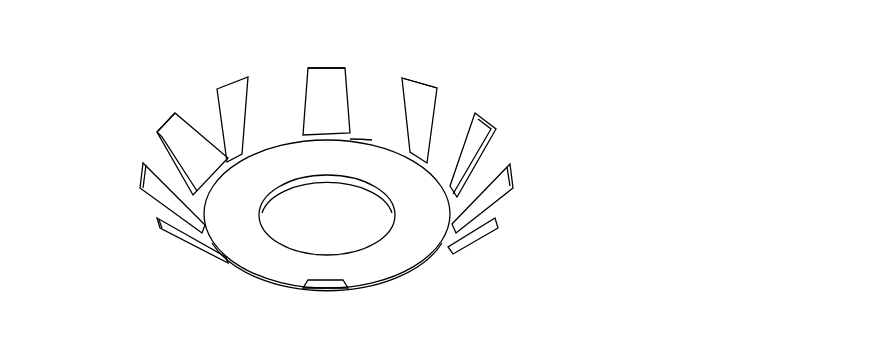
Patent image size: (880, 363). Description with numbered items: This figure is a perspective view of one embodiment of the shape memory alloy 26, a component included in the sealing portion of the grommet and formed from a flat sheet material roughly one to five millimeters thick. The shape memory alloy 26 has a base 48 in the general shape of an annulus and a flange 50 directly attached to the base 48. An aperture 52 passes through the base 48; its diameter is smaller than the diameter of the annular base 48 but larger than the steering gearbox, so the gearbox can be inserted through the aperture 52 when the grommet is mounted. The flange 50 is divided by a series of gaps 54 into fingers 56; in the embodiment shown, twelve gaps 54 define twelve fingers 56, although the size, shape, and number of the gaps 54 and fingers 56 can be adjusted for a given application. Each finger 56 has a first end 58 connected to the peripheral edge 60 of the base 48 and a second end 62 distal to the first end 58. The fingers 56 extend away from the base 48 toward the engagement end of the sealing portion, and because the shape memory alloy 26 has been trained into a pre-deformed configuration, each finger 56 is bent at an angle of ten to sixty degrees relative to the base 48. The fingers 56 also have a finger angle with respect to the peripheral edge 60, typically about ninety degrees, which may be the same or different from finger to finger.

The shape memory alloy 26 is at (107, 100).
The base 48 is at (378, 267).
The flange 50 is at (360, 138).
The aperture 52 is at (362, 231).
The gaps 54 is at (196, 100).
The fingers 56 is at (158, 137).
The first end 58 is at (443, 173).
The peripheral edge 60 is at (260, 208).
The second end 62 is at (487, 122).